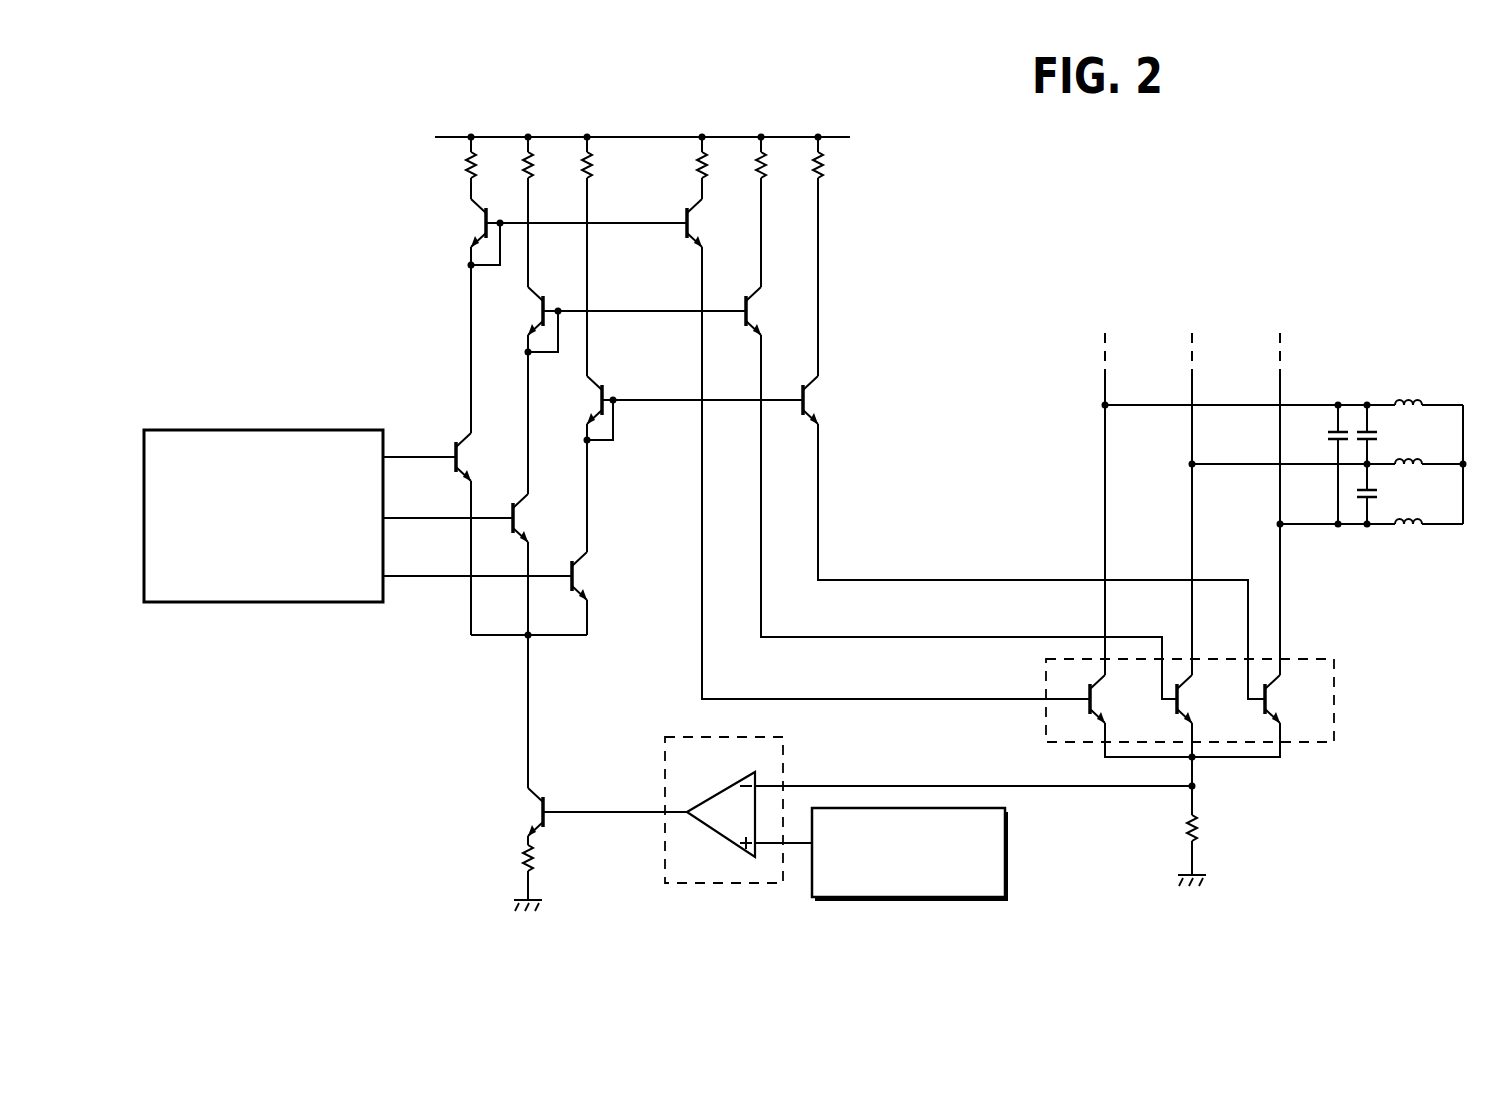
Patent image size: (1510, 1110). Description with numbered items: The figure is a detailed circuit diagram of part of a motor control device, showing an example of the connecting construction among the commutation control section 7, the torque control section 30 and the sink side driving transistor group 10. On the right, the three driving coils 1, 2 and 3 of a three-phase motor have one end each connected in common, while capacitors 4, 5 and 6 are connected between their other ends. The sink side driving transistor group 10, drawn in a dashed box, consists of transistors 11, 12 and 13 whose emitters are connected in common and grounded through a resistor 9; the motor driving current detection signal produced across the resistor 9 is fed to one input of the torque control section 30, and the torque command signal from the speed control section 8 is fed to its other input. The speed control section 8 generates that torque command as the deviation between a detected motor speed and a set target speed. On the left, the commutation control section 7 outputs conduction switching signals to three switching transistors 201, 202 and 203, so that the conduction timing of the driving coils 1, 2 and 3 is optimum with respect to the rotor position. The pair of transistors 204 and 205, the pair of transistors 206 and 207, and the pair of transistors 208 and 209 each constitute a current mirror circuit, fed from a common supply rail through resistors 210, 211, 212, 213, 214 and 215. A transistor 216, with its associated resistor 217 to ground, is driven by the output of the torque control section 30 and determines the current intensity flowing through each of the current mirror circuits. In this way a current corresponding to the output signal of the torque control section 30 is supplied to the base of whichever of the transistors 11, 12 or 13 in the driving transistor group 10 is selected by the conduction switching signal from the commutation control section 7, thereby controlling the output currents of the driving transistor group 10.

The driving coil 1 is at (1415, 400).
The driving coil 2 is at (1425, 462).
The driving coil 3 is at (1415, 527).
The capacitor 4 is at (1379, 436).
The capacitor 5 is at (1379, 494).
The capacitor 6 is at (1327, 436).
The commutation control section 7 is at (278, 430).
The speed control section 8 is at (1007, 852).
The resistor 9 is at (1198, 828).
The sink side driving transistor group 10 is at (1334, 722).
The transistor 11 is at (1086, 710).
The transistor 12 is at (1174, 710).
The transistor 13 is at (1262, 710).
The torque control section 30 is at (665, 850).
The switching transistor 201 is at (453, 445).
The switching transistor 202 is at (533, 518).
The switching transistor 203 is at (582, 578).
The transistor 204 is at (482, 226).
The transistor 205 is at (688, 240).
The transistor 206 is at (540, 312).
The transistor 207 is at (765, 315).
The transistor 208 is at (602, 395).
The transistor 209 is at (820, 406).
The resistor 210 is at (465, 165).
The resistor 211 is at (527, 170).
The resistor 212 is at (587, 150).
The resistor 213 is at (700, 170).
The resistor 214 is at (761, 150).
The resistor 215 is at (825, 165).
The transistor 216 is at (520, 810).
The resistor 217 is at (518, 858).